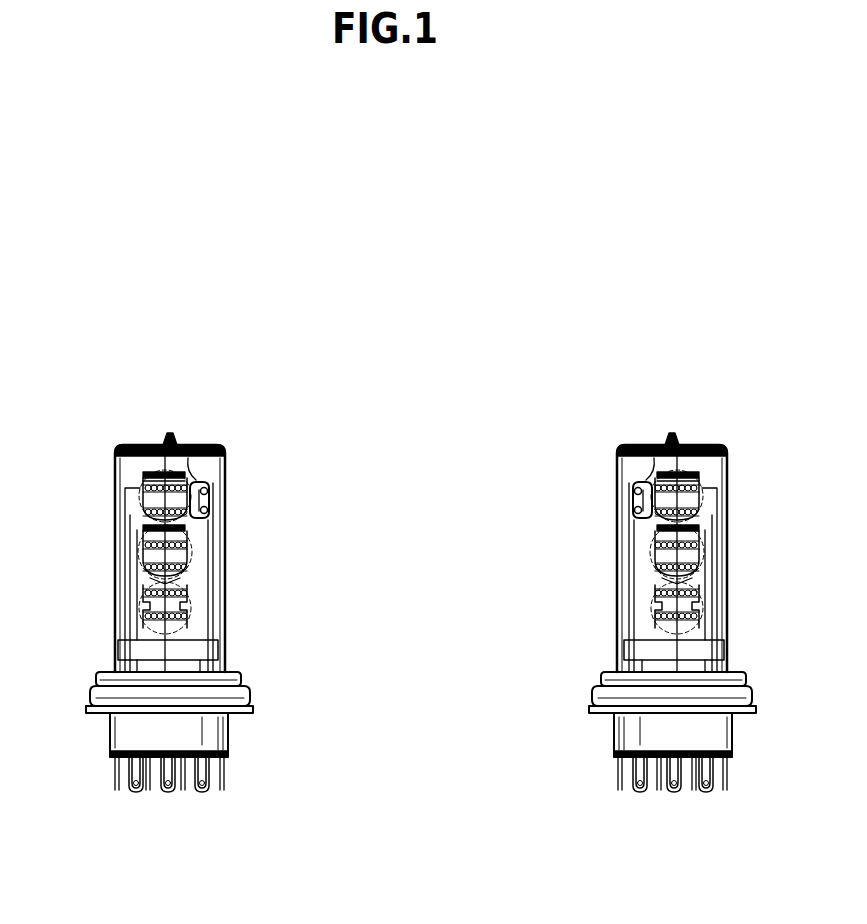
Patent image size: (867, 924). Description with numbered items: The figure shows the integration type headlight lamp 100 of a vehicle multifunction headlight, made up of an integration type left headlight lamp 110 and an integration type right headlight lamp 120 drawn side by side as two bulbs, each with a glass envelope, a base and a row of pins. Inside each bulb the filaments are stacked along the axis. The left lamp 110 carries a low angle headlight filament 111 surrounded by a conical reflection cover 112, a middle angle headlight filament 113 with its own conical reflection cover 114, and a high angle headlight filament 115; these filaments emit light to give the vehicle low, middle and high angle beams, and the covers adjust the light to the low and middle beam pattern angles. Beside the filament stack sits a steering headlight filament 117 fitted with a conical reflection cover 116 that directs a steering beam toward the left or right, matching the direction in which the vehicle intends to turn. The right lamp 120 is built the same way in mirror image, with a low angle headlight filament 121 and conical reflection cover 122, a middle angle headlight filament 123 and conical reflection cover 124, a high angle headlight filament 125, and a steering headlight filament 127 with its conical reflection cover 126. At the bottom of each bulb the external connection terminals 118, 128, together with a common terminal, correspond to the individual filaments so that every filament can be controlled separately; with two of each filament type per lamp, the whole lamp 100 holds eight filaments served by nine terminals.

The integration type headlight lamp 100 is at (437, 822).
The integration type left headlight lamp 110 is at (265, 356).
The low angle headlight filament 111 is at (141, 484).
The conical reflection cover 112 is at (143, 496).
The middle angle headlight filament 113 is at (192, 537).
The conical reflection cover 114 is at (170, 555).
The high angle headlight filament 115 is at (192, 604).
The conical reflection cover 116 is at (191, 472).
The steering headlight filament 117 is at (208, 483).
The external connection terminals 118 is at (207, 773).
The integration type right headlight lamp 120 is at (777, 378).
The low angle headlight filament 121 is at (704, 481).
The conical reflection cover 122 is at (694, 500).
The middle angle headlight filament 123 is at (665, 549).
The conical reflection cover 124 is at (660, 544).
The high angle headlight filament 125 is at (657, 598).
The conical reflection cover 126 is at (654, 468).
The steering headlight filament 127 is at (633, 484).
The external connection terminals 128 is at (639, 772).